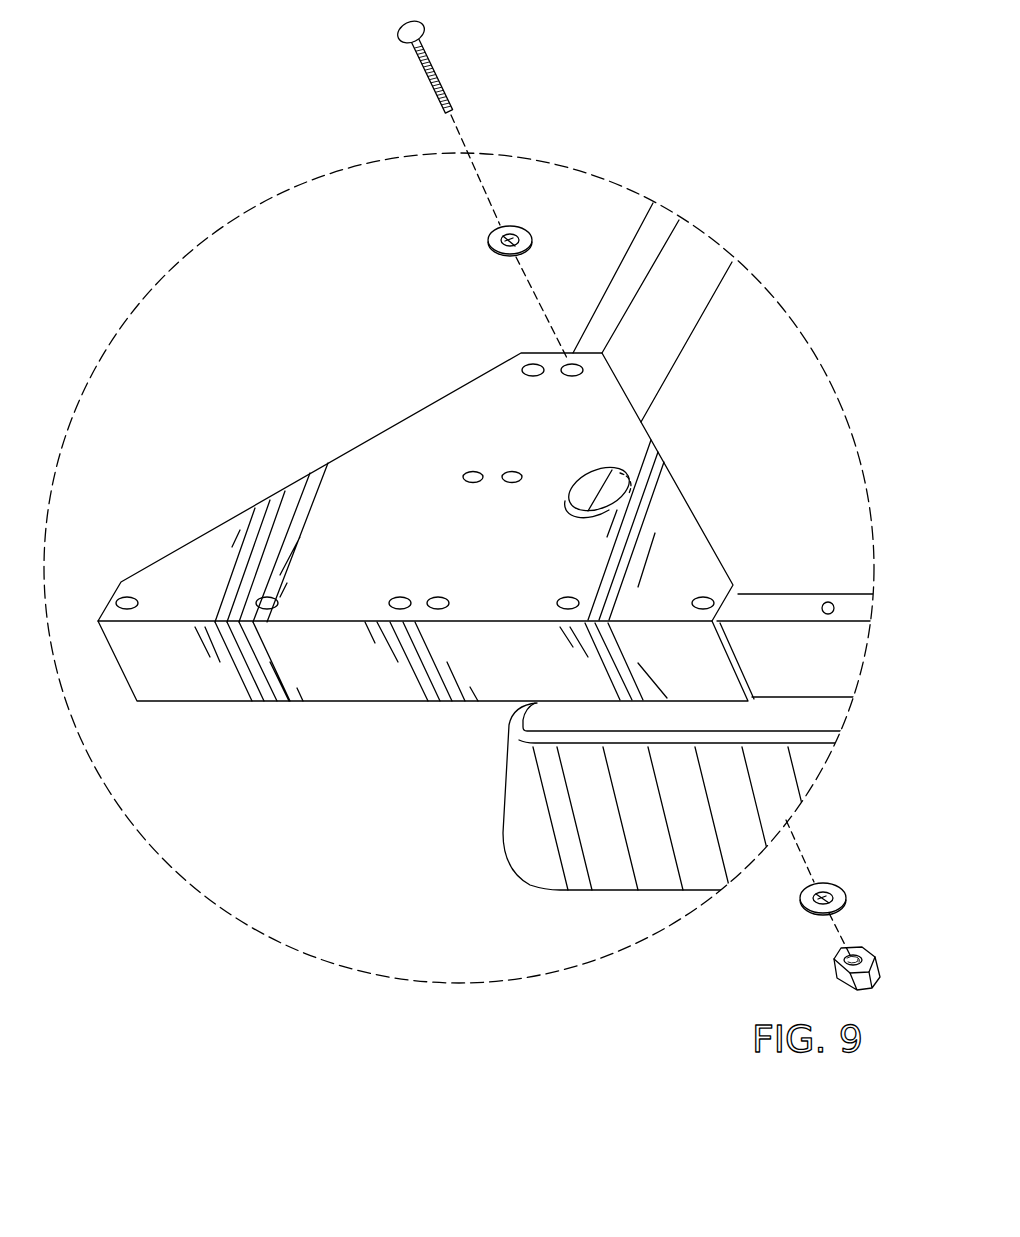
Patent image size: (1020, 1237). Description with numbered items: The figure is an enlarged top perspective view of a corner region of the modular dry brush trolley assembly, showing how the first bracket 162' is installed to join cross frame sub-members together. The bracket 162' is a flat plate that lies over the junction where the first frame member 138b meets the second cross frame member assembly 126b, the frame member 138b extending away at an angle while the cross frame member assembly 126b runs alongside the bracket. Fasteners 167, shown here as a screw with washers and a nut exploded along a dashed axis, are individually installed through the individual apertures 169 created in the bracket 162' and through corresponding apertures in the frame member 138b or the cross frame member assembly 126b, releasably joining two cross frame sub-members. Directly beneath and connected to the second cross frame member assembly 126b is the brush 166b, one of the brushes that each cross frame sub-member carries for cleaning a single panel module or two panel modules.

The fastener 167 is at (443, 82).
The aperture 169 is at (571, 368).
The first frame member 138b is at (672, 326).
The second cross frame member assembly 126b is at (780, 610).
The first bracket 162' is at (423, 588).
The fourth brush 166b is at (532, 861).